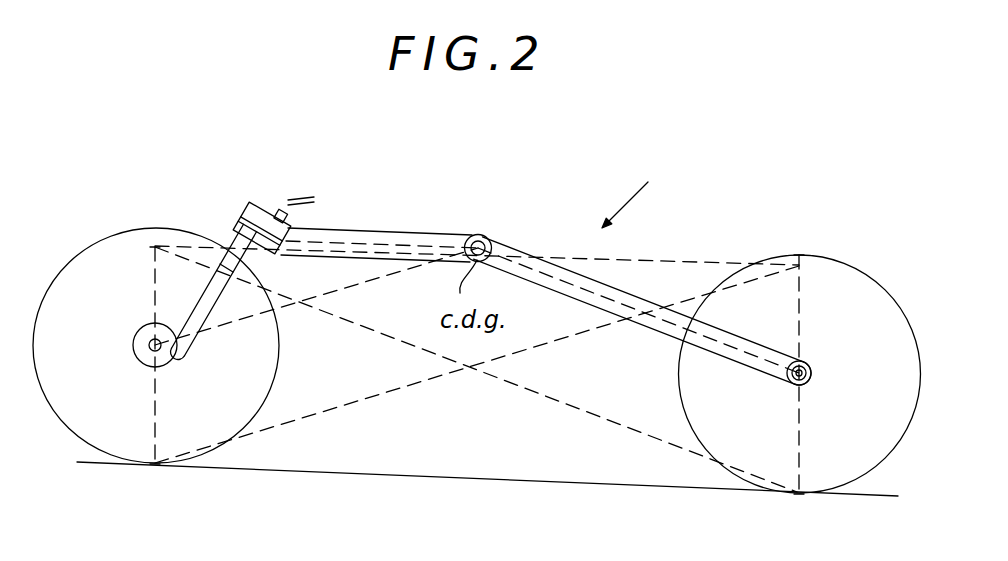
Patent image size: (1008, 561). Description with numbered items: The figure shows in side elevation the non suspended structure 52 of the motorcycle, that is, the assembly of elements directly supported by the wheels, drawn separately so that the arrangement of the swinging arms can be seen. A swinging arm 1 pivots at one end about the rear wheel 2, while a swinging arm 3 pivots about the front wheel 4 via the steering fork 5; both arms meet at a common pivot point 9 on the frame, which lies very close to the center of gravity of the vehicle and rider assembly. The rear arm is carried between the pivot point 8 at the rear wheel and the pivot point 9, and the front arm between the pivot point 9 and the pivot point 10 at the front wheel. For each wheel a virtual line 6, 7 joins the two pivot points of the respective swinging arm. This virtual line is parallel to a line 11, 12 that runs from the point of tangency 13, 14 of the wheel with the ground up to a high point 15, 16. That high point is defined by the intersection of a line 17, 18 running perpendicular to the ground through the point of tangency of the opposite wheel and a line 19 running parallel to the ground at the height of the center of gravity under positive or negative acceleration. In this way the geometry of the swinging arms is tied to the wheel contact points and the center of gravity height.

The swinging arm 1 is at (660, 333).
The rear wheel 2 is at (869, 450).
The swinging arm 3 is at (366, 232).
The front wheel 4 is at (253, 390).
The steering fork 5 is at (231, 255).
The virtual line 6 is at (553, 277).
The virtual line 7 is at (388, 277).
The pivot point 8 is at (812, 374).
The pivot point 9 is at (474, 266).
The pivot point 10 is at (140, 341).
The line 11 is at (572, 398).
The line 12 is at (358, 403).
The point of tangency 13 is at (803, 512).
The point of tangency 14 is at (154, 484).
The high point 15 is at (802, 262).
The high point 16 is at (152, 243).
The line 17 is at (804, 311).
The line 18 is at (152, 283).
The line 19 is at (638, 262).
The non suspended structure 52 is at (646, 198).